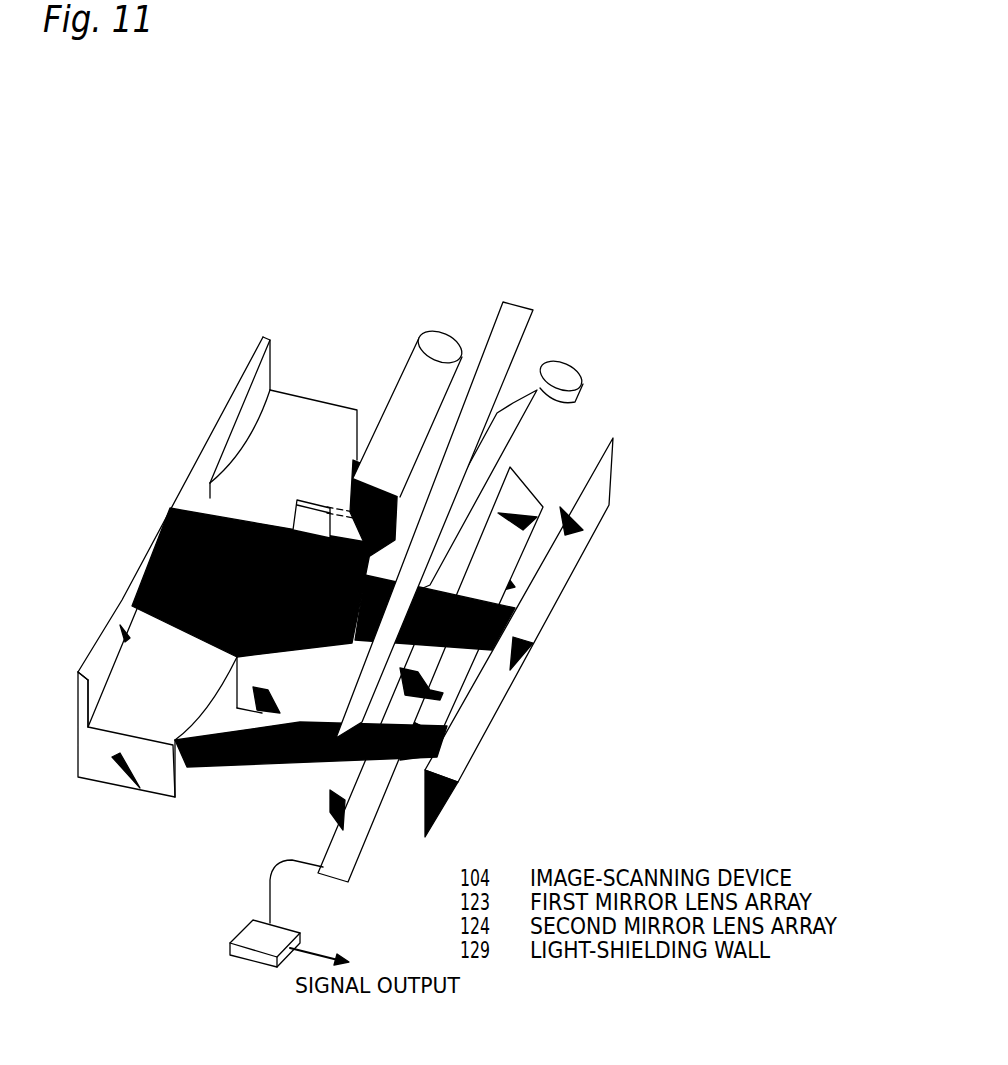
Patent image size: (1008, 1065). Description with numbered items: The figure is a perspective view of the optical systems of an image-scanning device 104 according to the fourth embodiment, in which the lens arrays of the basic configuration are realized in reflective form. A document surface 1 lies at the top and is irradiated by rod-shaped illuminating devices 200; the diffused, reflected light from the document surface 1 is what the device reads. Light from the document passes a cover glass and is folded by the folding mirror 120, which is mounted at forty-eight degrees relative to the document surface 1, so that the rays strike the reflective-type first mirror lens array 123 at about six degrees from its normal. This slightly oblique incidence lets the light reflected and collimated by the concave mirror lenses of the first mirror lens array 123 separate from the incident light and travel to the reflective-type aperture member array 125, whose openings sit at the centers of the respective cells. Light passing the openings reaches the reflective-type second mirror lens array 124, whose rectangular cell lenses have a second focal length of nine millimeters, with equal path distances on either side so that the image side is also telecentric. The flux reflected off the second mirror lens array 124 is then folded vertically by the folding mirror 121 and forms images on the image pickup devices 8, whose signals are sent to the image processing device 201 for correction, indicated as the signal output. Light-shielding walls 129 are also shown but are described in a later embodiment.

The image-scanning device 104 is at (389, 537).
The first mirror lens array 123 is at (273, 363).
The second mirror lens array 124 is at (358, 418).
The light-shielding wall 129 is at (313, 497).
The document surface 1 is at (520, 302).
The illuminating device 200 is at (455, 330).
The folding mirror 120 is at (515, 403).
The folding mirror 121 is at (527, 490).
The reflective-type aperture member array 125 is at (617, 473).
The image pickup device 8 is at (367, 857).
The image processing device 201 is at (230, 948).